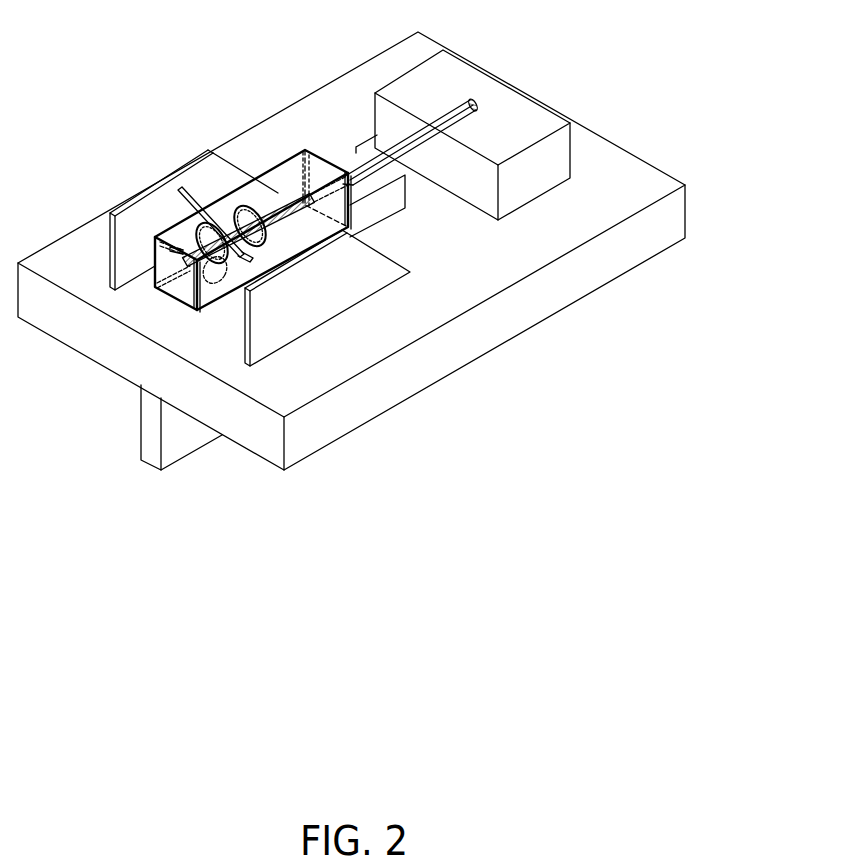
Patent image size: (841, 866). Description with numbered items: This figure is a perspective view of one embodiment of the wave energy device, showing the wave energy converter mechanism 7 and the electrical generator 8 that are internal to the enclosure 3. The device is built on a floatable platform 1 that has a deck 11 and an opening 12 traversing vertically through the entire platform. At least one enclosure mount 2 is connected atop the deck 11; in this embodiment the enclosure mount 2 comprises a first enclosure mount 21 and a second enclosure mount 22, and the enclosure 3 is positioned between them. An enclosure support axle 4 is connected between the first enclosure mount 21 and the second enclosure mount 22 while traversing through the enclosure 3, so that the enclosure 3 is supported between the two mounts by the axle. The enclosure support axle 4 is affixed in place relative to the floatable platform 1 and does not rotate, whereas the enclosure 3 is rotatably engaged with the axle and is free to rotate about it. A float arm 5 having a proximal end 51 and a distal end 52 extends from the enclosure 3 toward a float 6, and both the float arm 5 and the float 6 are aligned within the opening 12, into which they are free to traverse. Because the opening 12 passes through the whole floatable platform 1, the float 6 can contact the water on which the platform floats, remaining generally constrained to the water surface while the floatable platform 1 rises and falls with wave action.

The floatable platform 1 is at (690, 164).
The deck 11 is at (466, 279).
The opening 12 is at (400, 206).
The enclosure mount 2 is at (234, 268).
The first enclosure mount 21 is at (110, 210).
The second enclosure mount 22 is at (358, 288).
The enclosure 3 is at (285, 193).
The enclosure support axle 4 is at (175, 179).
The float arm 5 is at (385, 134).
The proximal end 51 is at (343, 167).
The distal end 52 is at (470, 96).
The float 6 is at (523, 105).
The wave energy converter mechanism 7 is at (201, 224).
The electrical generator 8 is at (190, 277).